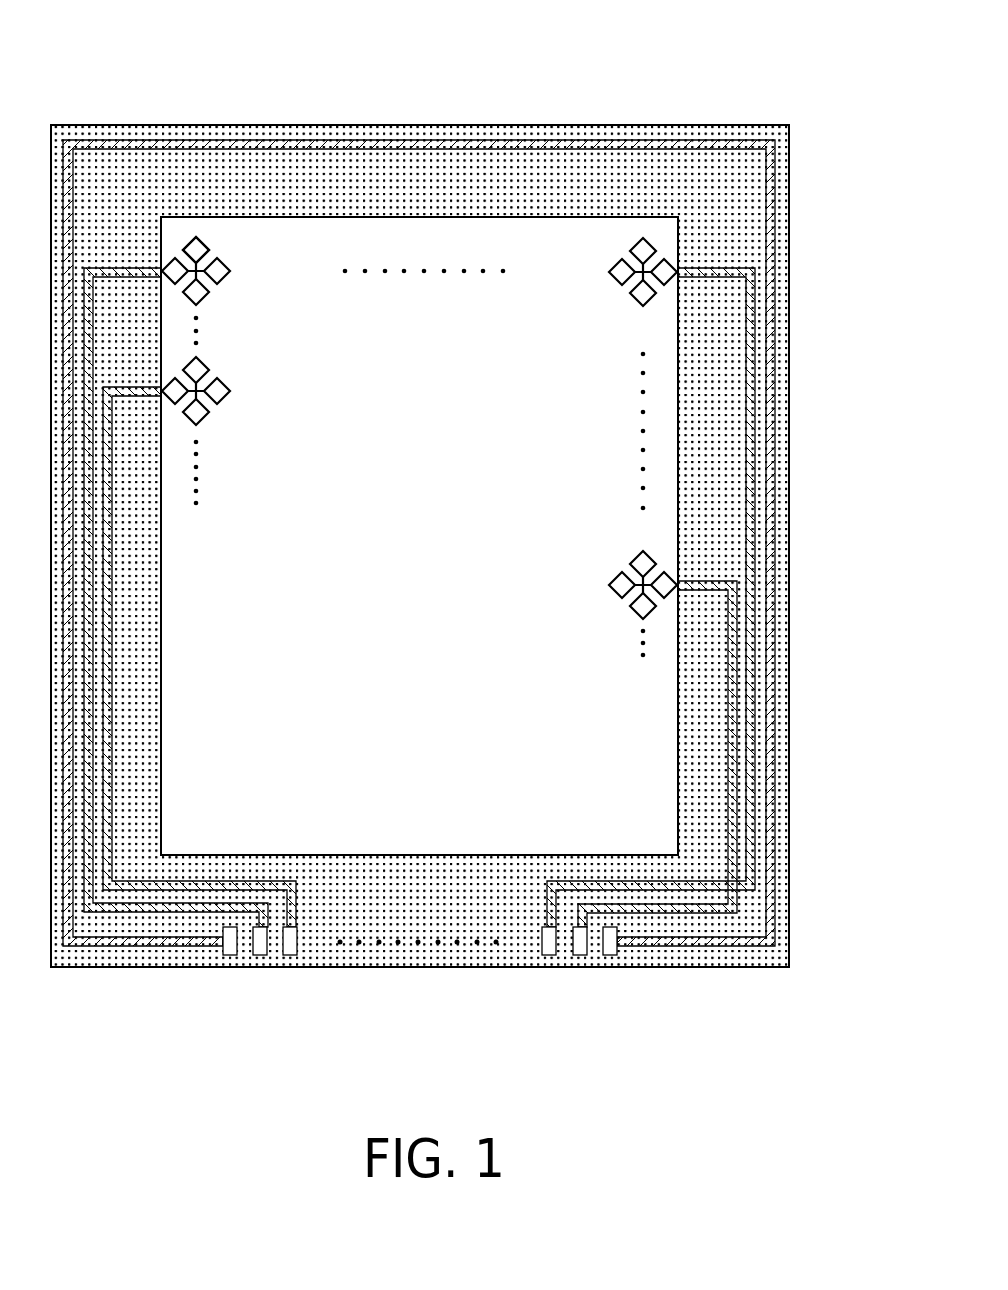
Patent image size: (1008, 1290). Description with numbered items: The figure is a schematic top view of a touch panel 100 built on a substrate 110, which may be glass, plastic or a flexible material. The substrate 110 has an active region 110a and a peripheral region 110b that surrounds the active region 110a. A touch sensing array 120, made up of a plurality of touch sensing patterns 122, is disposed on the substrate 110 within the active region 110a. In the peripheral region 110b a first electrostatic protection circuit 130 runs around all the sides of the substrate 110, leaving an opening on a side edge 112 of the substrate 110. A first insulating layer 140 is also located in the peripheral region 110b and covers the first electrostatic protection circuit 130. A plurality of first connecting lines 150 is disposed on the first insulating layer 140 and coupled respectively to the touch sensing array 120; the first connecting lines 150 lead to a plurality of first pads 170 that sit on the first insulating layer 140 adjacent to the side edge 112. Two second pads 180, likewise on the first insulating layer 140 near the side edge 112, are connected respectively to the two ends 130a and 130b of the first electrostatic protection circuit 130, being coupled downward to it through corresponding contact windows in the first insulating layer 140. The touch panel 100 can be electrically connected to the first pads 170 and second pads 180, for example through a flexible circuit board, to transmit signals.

The touch panel 100 is at (464, 544).
The substrate 110 is at (420, 483).
The active region 110a is at (541, 216).
The peripheral region 110b is at (622, 126).
The side edge 112 is at (97, 968).
The touch sensing array 120 is at (417, 495).
The touch sensing patterns 122 is at (196, 246).
The first electrostatic protection circuit 130 is at (470, 591).
The first end of the first electrostatic protection circuit 130a is at (222, 944).
The second end of the first electrostatic protection circuit 130b is at (618, 944).
The first insulating layer 140 is at (730, 210).
The first connecting lines 150 is at (750, 478).
The first pads 170 is at (549, 953).
The second pads 180 is at (231, 953).